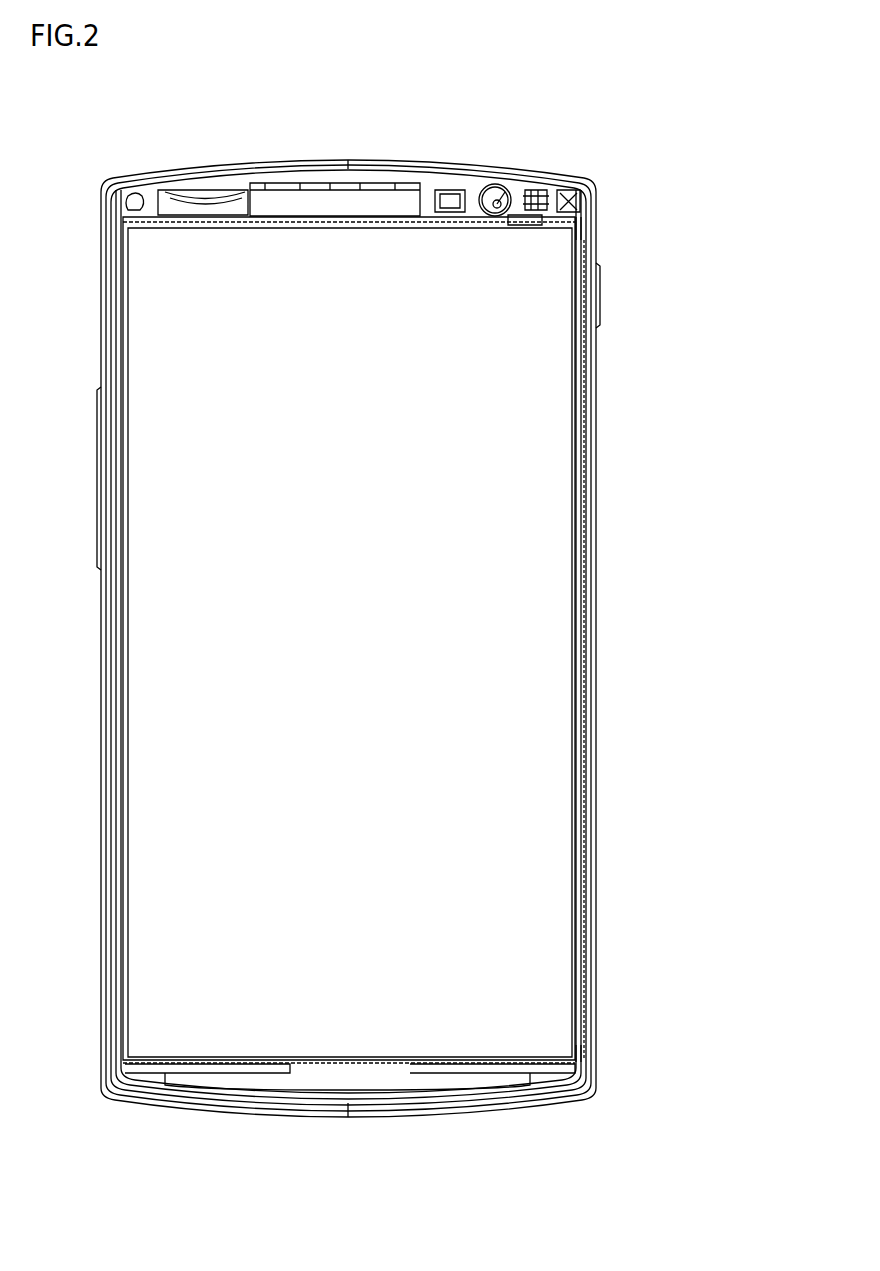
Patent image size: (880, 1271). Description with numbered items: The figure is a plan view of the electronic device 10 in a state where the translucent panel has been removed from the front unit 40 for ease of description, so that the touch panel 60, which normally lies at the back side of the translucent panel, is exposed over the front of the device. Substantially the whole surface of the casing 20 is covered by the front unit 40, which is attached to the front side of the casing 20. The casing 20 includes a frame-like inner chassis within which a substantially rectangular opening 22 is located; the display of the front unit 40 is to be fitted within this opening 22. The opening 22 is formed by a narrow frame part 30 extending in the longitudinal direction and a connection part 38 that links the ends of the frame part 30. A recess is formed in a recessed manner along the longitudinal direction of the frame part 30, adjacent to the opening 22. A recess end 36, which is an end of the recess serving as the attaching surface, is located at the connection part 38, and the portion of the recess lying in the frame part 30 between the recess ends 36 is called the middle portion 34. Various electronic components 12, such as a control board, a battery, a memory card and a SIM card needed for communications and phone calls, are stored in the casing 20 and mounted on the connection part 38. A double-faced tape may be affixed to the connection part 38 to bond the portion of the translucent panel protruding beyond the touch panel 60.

The electronic device 10 is at (587, 141).
The electronic components 12 is at (495, 184).
The casing 20 is at (595, 250).
The opening 22 is at (583, 457).
The frame part 30 is at (590, 568).
The middle portion 34 is at (588, 636).
The recess end 36 is at (587, 242).
The connection part 38 is at (552, 187).
The front unit 40 is at (488, 860).
The touch panel 60 is at (472, 723).